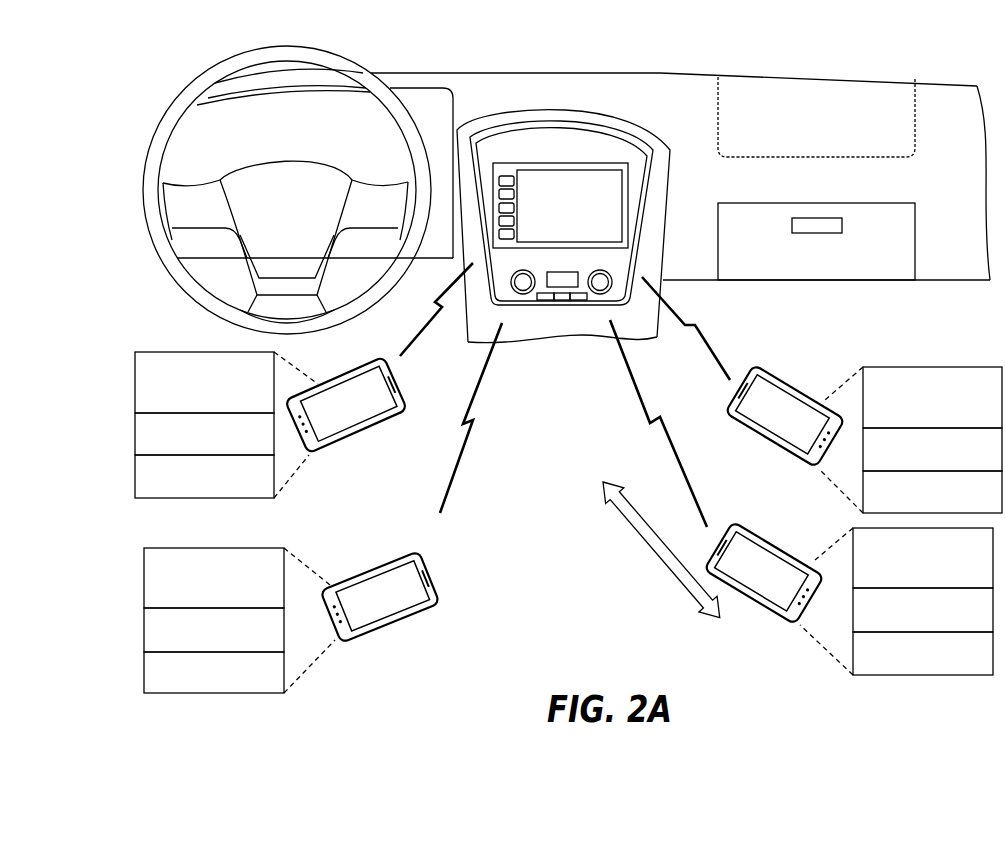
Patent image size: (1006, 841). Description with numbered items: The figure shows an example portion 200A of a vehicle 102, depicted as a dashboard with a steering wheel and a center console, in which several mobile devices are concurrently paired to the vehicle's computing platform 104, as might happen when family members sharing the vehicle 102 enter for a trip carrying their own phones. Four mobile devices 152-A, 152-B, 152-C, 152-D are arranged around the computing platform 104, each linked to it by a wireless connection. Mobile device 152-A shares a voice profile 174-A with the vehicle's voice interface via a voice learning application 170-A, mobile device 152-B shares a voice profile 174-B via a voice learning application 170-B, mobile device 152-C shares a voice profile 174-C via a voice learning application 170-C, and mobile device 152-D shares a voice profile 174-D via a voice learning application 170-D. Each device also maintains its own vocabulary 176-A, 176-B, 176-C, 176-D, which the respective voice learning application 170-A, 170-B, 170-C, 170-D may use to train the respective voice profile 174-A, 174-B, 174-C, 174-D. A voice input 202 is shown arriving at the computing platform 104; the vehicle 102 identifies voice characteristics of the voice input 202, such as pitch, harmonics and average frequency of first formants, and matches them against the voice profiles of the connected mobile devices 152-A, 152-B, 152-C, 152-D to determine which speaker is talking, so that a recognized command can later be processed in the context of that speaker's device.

The example portion of a vehicle 200A is at (148, 42).
The vehicle 102 is at (583, 69).
The computing platform 104 is at (570, 161).
The mobile device 152-A is at (360, 366).
The mobile device 152-B is at (401, 552).
The mobile device 152-C is at (766, 348).
The mobile device 152-D is at (771, 541).
The voice learning application 170-A is at (186, 408).
The voice learning application 170-B is at (195, 604).
The voice learning application 170-C is at (913, 423).
The voice learning application 170-D is at (904, 584).
The voice profile 174-A is at (186, 451).
The voice profile 174-B is at (195, 647).
The voice profile 174-C is at (913, 466).
The voice profile 174-D is at (904, 627).
The vocabulary 176-A is at (186, 494).
The vocabulary 176-B is at (195, 690).
The vocabulary 176-C is at (913, 509).
The vocabulary 176-D is at (904, 670).
The voice input 202 is at (652, 553).